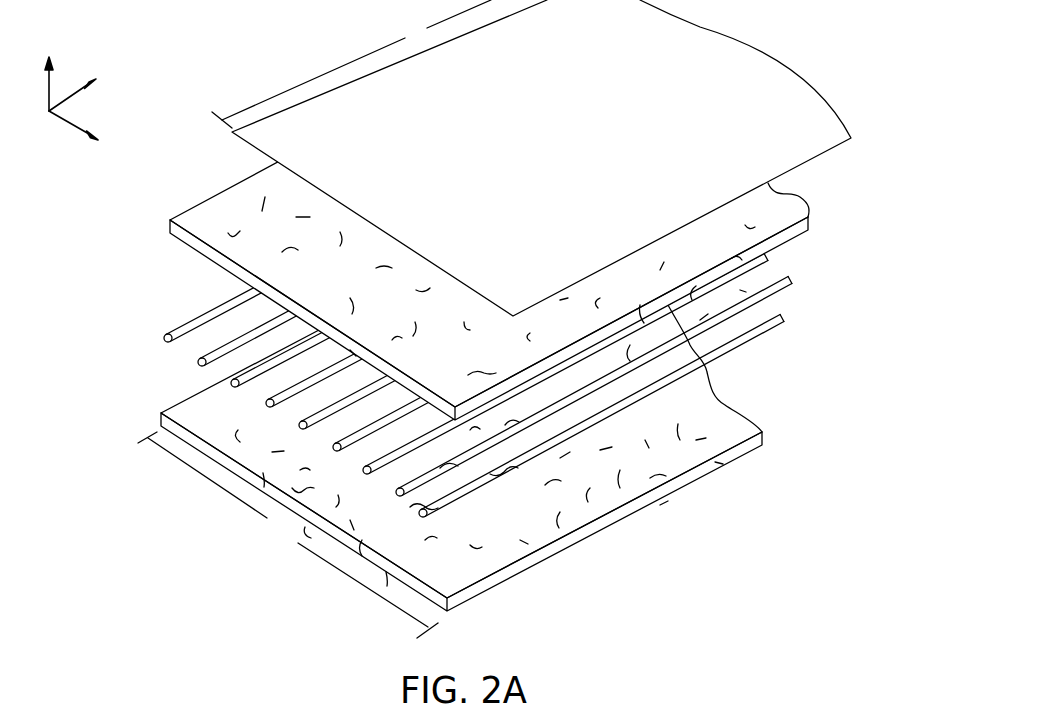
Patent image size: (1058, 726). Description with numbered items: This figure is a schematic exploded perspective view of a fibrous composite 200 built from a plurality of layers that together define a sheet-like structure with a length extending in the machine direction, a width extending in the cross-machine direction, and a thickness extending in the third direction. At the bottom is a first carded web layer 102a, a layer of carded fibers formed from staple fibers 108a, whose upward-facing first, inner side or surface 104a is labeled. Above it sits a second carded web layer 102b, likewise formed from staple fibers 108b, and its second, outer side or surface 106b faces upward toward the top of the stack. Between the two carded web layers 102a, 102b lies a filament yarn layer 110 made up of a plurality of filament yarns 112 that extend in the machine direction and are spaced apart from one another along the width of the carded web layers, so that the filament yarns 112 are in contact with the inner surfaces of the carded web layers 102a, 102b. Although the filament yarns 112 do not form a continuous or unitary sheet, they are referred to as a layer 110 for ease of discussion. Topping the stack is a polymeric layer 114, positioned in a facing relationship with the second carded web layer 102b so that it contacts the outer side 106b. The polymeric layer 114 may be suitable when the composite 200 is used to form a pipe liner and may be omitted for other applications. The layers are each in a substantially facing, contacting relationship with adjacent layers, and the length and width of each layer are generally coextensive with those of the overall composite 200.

The composite 200 is at (500, 319).
The first carded web layer 102a is at (461, 458).
The second carded web layer 102b is at (492, 225).
The first, inner side or surface 104a is at (222, 421).
The second, outer side or surface 106b is at (240, 223).
The staple fibers 108a is at (692, 440).
The staple fibers 108b is at (748, 226).
The filament yarn layer 110 is at (150, 331).
The filament yarns 112 is at (795, 282).
The polymeric layer 114 is at (873, 143).